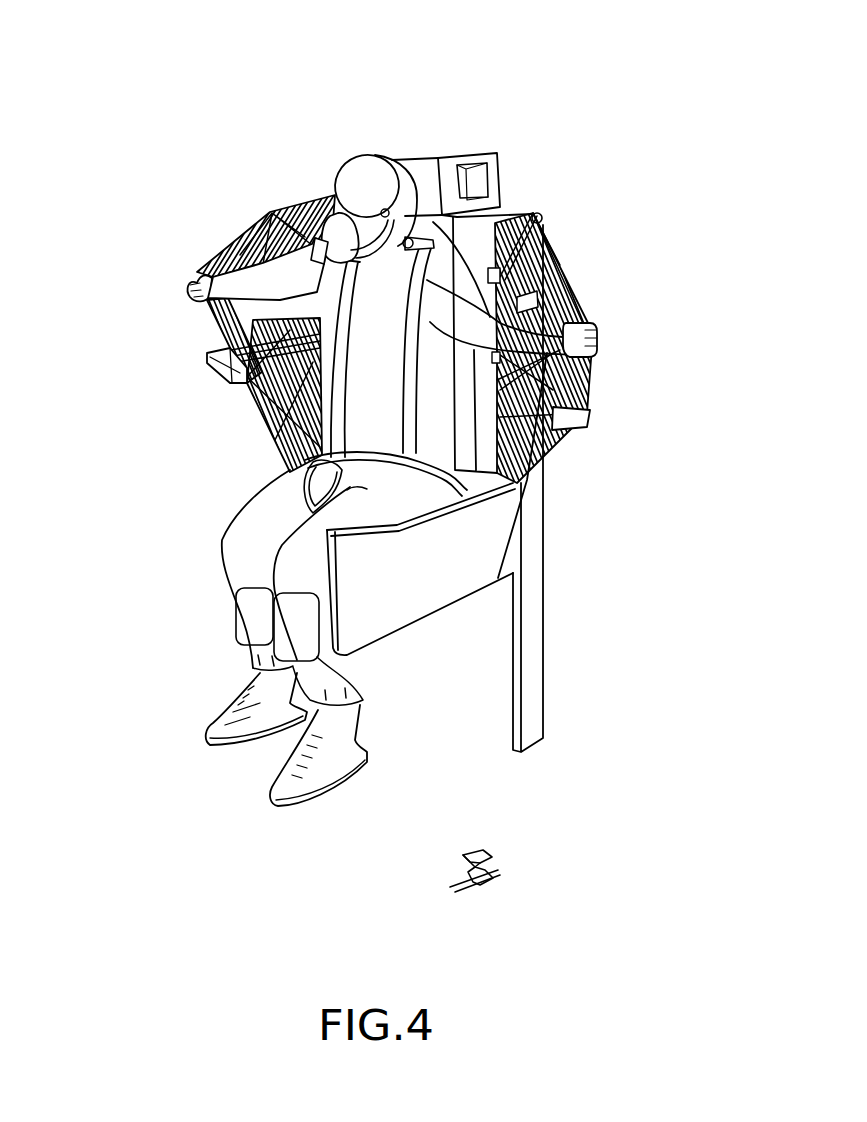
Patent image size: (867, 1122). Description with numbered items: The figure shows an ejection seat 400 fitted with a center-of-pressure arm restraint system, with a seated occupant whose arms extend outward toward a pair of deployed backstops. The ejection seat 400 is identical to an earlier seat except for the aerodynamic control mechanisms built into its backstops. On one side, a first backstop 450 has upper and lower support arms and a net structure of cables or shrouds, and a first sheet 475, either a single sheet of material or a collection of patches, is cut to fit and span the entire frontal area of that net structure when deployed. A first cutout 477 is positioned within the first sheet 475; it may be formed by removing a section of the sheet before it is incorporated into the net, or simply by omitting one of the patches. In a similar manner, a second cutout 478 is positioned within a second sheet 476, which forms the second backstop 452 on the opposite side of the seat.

The ejection seat 400 is at (196, 123).
The first backstop 450 is at (602, 221).
The second backstop 452 is at (168, 316).
The first sheet 475 is at (530, 463).
The second sheet 476 is at (282, 403).
The first cutout 477 is at (560, 277).
The second cutout 478 is at (240, 258).